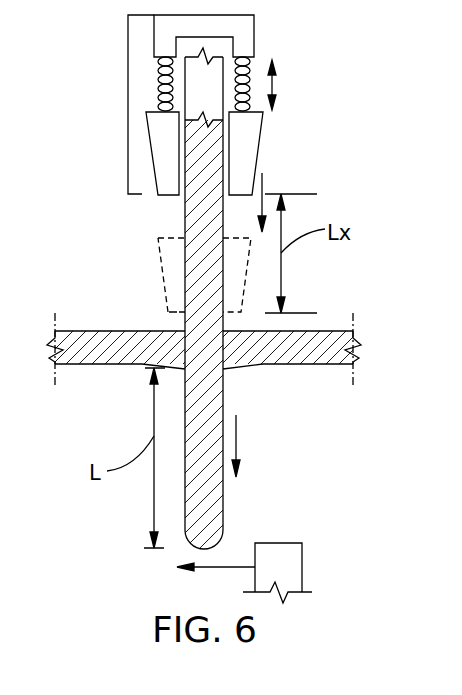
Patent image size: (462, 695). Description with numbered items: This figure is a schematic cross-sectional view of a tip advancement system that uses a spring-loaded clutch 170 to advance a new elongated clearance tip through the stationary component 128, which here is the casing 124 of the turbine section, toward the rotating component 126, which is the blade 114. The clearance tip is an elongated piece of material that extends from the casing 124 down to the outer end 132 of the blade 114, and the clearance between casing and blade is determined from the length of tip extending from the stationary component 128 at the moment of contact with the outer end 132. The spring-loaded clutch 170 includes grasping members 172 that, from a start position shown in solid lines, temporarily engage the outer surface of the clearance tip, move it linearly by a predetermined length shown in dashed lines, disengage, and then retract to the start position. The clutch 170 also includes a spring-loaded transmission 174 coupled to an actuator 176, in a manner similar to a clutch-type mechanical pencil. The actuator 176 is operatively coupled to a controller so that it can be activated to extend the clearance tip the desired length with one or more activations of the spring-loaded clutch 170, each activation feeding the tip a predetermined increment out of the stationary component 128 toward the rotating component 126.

The spring-loaded clutch 170 is at (127, 118).
The grasping member 172 is at (165, 160).
The spring-loaded transmission 174 is at (252, 92).
The actuator 176 is at (248, 34).
The casing 124 is at (250, 339).
The stationary component 128 is at (302, 338).
The outer end 132 is at (323, 540).
The blade 114 is at (323, 540).
The rotating component 126 is at (278, 543).